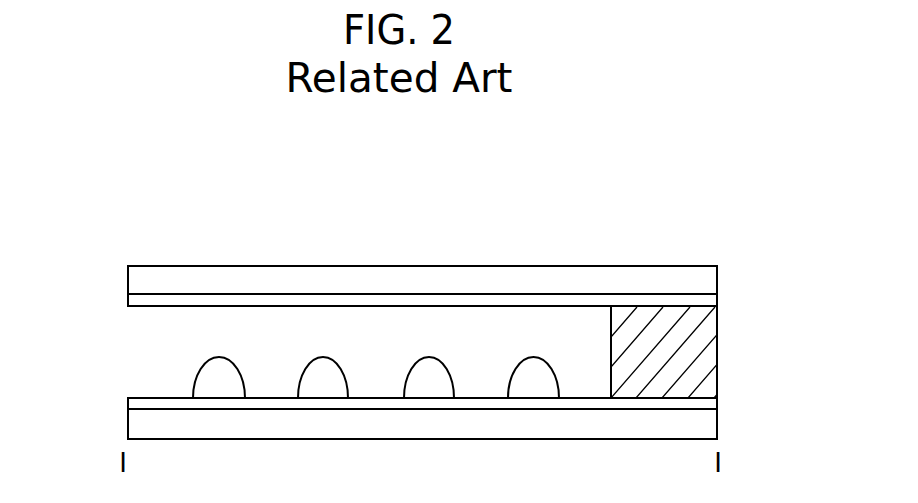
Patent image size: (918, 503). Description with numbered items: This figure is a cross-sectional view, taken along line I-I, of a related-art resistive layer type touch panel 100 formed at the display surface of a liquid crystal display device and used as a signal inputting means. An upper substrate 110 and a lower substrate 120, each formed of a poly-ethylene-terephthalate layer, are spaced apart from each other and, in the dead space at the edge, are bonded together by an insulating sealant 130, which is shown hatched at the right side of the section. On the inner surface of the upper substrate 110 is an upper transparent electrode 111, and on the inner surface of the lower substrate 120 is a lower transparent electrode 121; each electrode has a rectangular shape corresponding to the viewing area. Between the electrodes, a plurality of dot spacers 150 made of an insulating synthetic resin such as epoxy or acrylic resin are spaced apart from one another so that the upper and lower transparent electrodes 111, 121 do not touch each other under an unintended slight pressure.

The touch panel 100 is at (542, 256).
The upper substrate 110 is at (138, 282).
The upper transparent electrode 111 is at (137, 300).
The lower substrate 120 is at (138, 421).
The lower transparent electrode 121 is at (130, 402).
The insulating sealant 130 is at (712, 358).
The dot spacers 150 is at (207, 381).